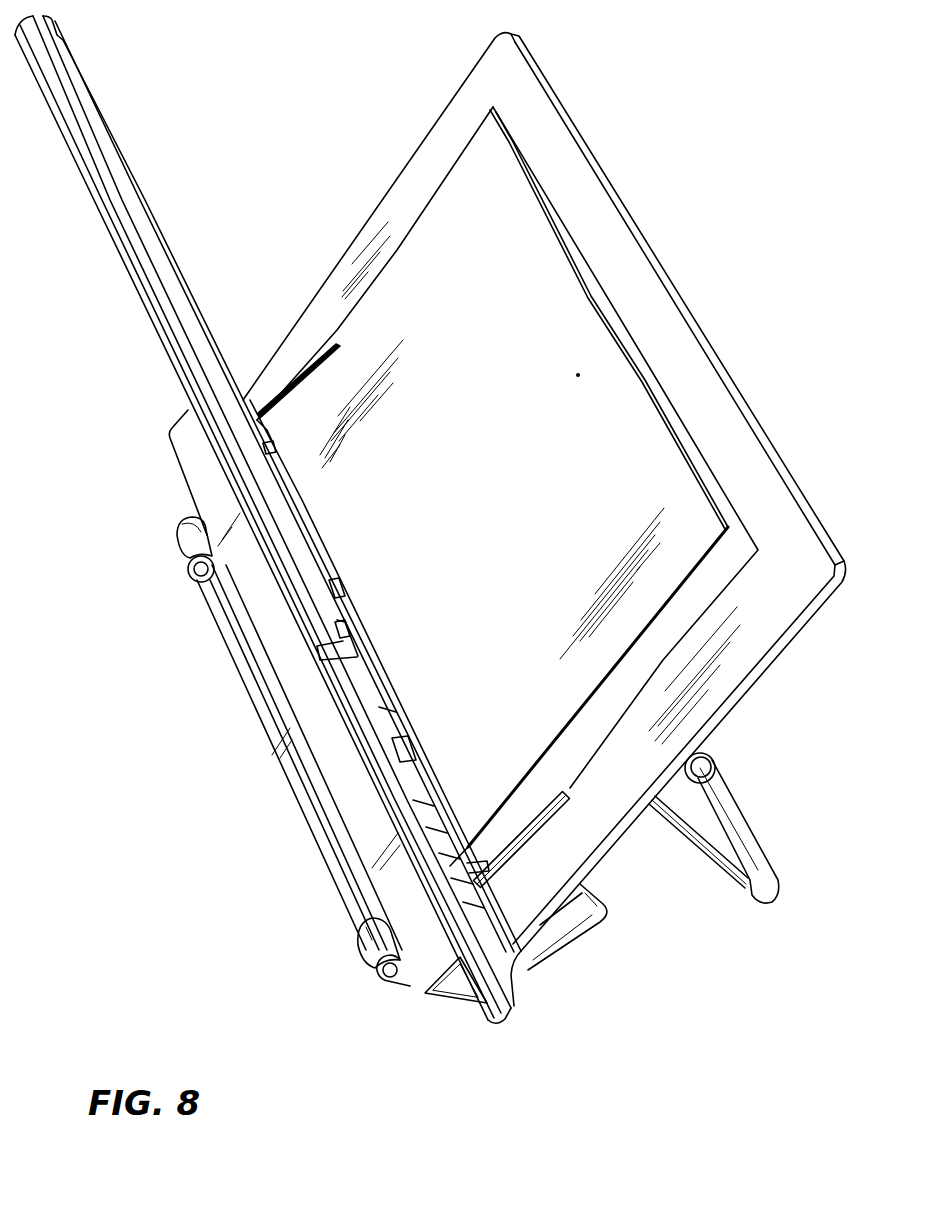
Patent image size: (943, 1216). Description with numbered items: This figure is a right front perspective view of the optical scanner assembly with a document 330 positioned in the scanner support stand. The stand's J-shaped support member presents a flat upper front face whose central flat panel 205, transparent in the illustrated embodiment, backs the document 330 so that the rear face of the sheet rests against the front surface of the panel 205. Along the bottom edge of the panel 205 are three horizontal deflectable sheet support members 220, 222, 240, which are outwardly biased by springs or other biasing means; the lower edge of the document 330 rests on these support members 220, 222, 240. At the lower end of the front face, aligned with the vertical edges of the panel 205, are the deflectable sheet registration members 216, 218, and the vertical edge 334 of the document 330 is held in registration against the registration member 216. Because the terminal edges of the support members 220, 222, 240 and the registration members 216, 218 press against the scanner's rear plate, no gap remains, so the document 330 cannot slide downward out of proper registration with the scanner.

The flat panel 205 is at (737, 553).
The document 330 is at (486, 483).
The vertical edge 334 is at (430, 188).
The deflectable sheet registration member 216 is at (280, 400).
The deflectable sheet registration member 218 is at (530, 840).
The deflectable sheet support member 220 is at (272, 458).
The deflectable sheet support member 222 is at (337, 596).
The deflectable sheet support member 240 is at (417, 763).